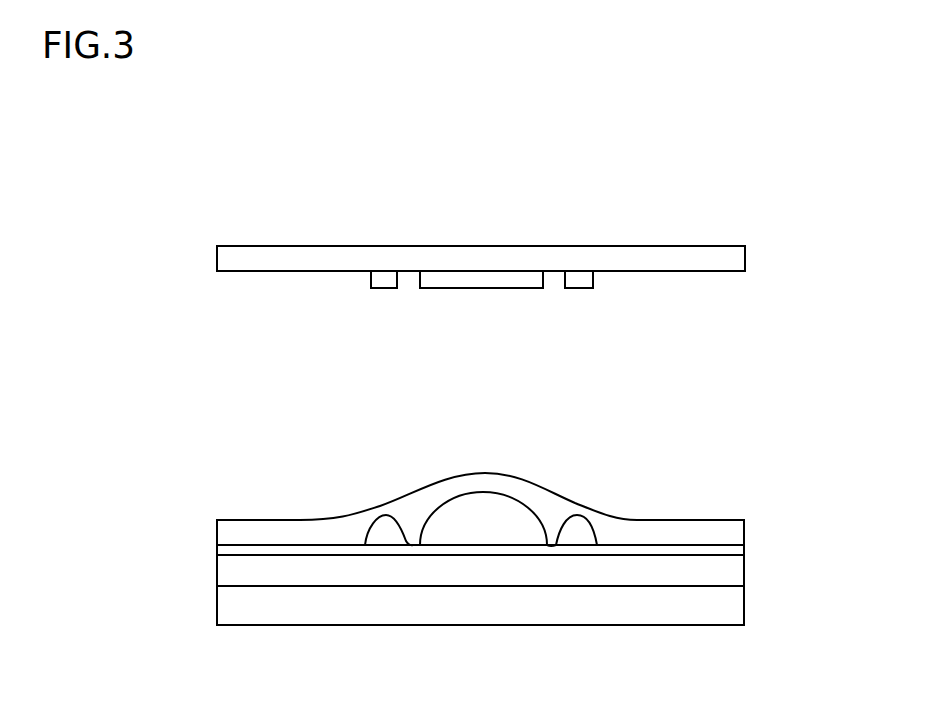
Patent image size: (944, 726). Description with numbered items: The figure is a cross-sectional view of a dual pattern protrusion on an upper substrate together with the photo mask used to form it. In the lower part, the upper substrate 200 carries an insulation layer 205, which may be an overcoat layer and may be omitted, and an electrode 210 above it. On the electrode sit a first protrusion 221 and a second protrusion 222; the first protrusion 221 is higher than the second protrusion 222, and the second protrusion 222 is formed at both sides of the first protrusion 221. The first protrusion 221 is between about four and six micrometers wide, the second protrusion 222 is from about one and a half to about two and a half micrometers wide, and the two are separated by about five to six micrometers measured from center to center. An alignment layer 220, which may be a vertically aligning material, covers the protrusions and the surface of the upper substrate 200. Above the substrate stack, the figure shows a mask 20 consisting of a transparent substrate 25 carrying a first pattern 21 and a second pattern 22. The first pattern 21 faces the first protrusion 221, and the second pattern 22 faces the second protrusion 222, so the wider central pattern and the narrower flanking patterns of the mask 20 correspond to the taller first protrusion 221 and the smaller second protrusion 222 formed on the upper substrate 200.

The mask 20 is at (512, 259).
The transparent substrate 25 is at (745, 258).
The first pattern 21 is at (481, 288).
The second pattern 22 is at (384, 288).
The upper substrate 200 is at (744, 615).
The insulation layer 205 is at (744, 580).
The electrode 210 is at (744, 553).
The alignment layer 220 is at (480, 490).
The first protrusion 221 is at (482, 497).
The second protrusion 222 is at (577, 523).